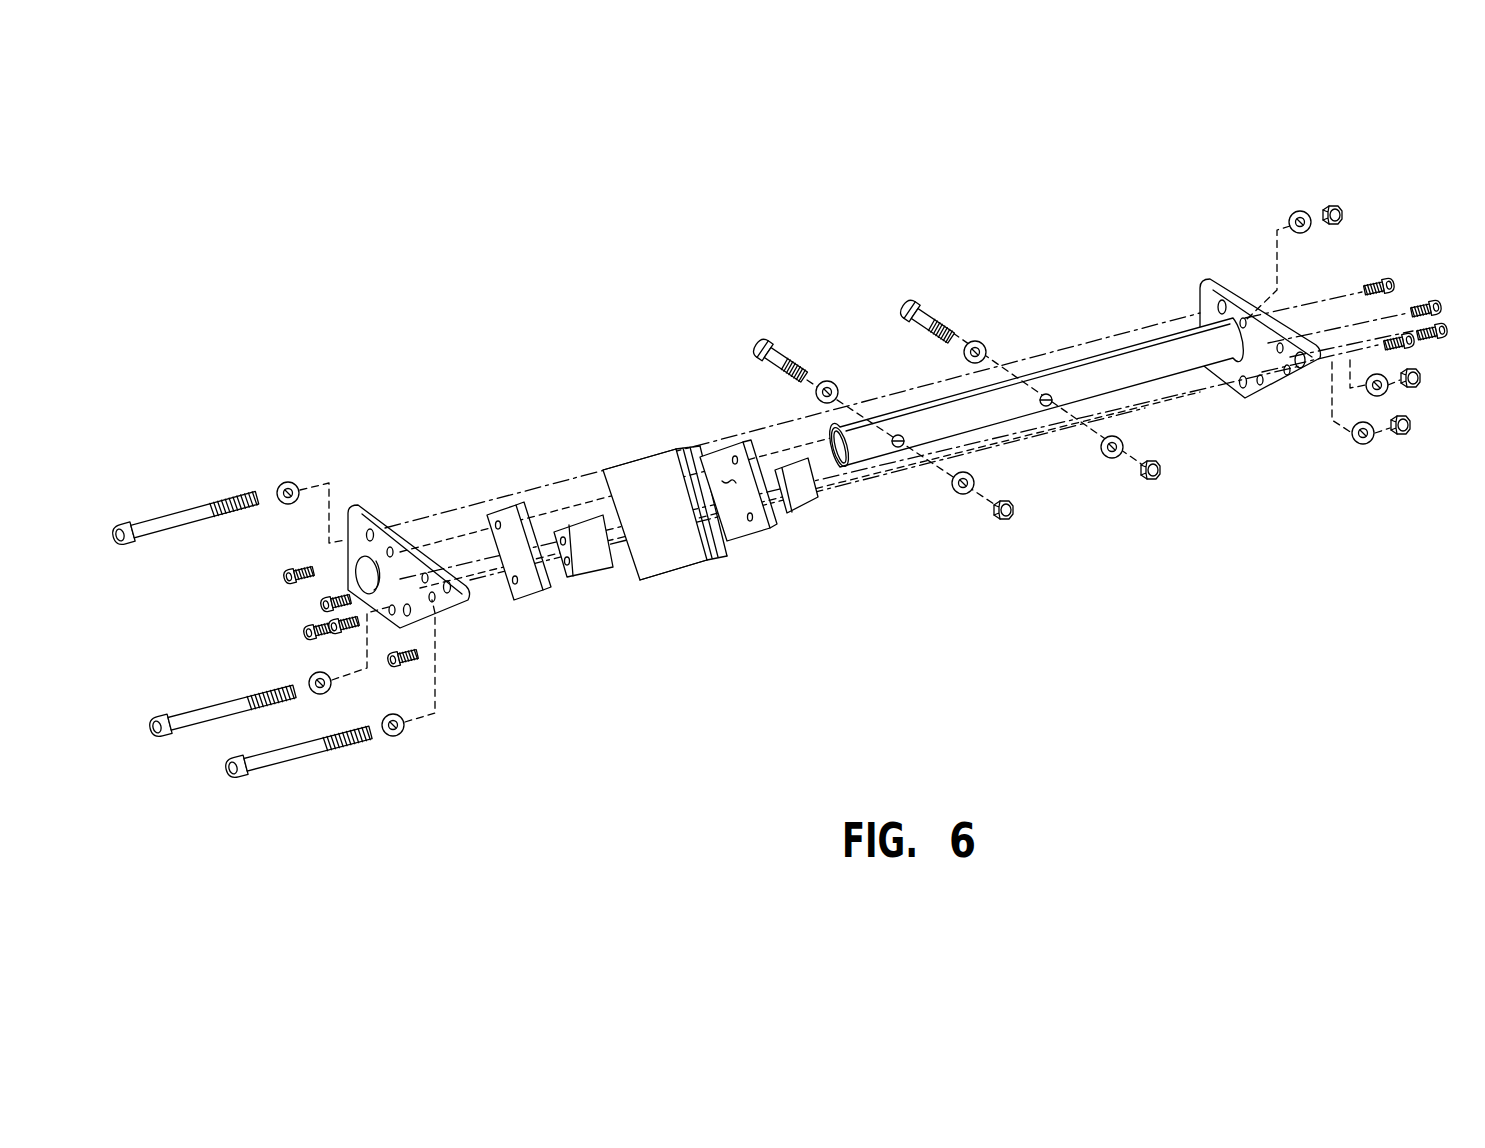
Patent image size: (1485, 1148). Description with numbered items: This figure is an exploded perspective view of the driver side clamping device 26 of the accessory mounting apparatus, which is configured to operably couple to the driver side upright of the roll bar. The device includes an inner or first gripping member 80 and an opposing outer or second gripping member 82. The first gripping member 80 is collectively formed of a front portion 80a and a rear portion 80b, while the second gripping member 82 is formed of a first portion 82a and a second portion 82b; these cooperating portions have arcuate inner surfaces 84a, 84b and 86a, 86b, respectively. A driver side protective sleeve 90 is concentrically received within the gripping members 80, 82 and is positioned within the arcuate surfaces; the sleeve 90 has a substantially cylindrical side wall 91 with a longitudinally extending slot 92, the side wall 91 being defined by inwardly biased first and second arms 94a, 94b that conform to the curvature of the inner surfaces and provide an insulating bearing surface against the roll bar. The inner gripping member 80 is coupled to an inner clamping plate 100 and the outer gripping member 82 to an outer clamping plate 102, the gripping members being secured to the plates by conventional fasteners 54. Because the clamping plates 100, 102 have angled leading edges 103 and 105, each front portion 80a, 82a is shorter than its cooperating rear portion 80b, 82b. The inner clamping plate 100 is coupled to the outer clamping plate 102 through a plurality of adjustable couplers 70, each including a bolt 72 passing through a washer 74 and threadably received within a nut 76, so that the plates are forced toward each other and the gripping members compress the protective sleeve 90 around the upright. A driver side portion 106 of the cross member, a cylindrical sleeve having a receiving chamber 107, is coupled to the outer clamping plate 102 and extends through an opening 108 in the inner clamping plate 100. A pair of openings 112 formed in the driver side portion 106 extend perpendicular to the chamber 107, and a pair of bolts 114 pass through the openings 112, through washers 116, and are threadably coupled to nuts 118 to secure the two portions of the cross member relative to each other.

The driver side clamping device 26 is at (781, 505).
The fasteners 54 is at (303, 633).
The adjustable couplers 70 is at (749, 508).
The bolt 72 is at (170, 522).
The washer 74 is at (289, 481).
The nut 76 is at (1335, 205).
The first gripping member 80 is at (529, 514).
The front portion 80a is at (558, 624).
The rear portion 80b is at (527, 600).
The second gripping member 82 is at (779, 454).
The first portion 82a is at (810, 518).
The second portion 82b is at (735, 523).
The arcuate inner surface 84a is at (579, 619).
The arcuate inner surface 84b is at (492, 546).
The arcuate inner surface 86a is at (846, 558).
The arcuate inner surface 86b is at (725, 470).
The driver side protective sleeve 90 is at (647, 529).
The cylindrical side wall 91 is at (655, 573).
The longitudinally extending slot 92 is at (660, 473).
The first arm 94a is at (620, 478).
The second arm 94b is at (720, 558).
The inner clamping plate 100 is at (338, 512).
The outer clamping plate 102 is at (1289, 336).
The angled leading edge 103 is at (430, 628).
The angled leading edge 105 is at (1268, 398).
The driver side portion 106 is at (1035, 416).
The receiving chamber 107 is at (840, 468).
The opening 108 is at (356, 562).
The openings 112 is at (906, 445).
The bolts 114 is at (760, 340).
The washers 116 is at (827, 381).
The nuts 118 is at (1003, 521).